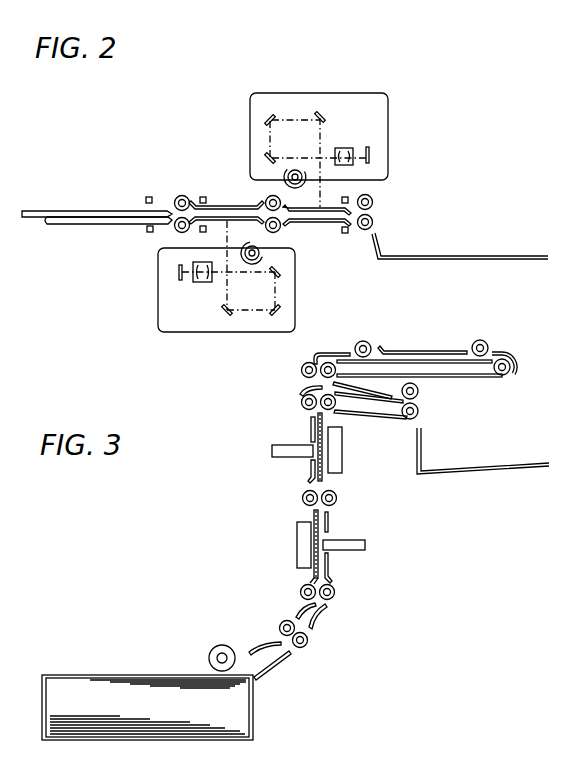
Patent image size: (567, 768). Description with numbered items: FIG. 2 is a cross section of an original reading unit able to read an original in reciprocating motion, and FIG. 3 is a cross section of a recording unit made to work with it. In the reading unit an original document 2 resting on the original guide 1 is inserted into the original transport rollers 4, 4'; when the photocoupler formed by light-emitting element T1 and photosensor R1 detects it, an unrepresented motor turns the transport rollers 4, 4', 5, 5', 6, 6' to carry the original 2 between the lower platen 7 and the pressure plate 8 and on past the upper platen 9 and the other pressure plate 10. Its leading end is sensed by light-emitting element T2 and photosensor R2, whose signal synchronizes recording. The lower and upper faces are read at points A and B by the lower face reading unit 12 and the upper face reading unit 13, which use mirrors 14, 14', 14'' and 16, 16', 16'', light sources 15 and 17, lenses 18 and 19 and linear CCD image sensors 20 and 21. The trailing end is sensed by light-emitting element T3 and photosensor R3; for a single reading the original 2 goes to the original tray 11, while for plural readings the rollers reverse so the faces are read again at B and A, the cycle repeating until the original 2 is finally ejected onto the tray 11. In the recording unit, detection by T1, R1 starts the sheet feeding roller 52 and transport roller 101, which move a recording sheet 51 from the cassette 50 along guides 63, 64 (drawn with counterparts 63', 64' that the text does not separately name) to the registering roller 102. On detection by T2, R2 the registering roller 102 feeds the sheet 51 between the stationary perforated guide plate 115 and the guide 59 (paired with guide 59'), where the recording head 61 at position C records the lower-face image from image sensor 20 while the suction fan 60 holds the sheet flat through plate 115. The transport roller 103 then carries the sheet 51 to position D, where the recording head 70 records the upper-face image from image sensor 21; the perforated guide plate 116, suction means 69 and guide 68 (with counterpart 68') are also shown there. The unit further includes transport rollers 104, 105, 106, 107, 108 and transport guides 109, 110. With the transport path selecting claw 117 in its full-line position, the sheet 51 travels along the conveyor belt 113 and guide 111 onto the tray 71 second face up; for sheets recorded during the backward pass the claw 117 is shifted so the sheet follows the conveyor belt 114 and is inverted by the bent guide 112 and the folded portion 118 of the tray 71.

In FIG. 2, the original guide 1 is at (62, 225).
In FIG. 2, the original document 2 is at (35, 211).
In FIG. 2, the original transport roller 4 is at (148, 244).
In FIG. 2, the original transport roller 4' is at (174, 178).
In FIG. 2, the original transport roller 5 is at (285, 232).
In FIG. 2, the original transport roller 5' is at (235, 167).
In FIG. 2, the original transport roller 6 is at (387, 222).
In FIG. 2, the original transport roller 6' is at (393, 197).
In FIG. 2, the lower platen 7 is at (232, 222).
In FIG. 2, the pressure plate 8 is at (244, 205).
In FIG. 2, the upper platen 9 is at (326, 207).
In FIG. 2, the pressure plate 10 is at (327, 224).
In FIG. 2, the original tray 11 is at (506, 256).
In FIG. 2, the lower face reading unit 12 is at (175, 332).
In FIG. 2, the upper face reading unit 13 is at (356, 93).
In FIG. 2, the mirror 14 is at (207, 317).
In FIG. 2, the mirror 14' is at (301, 309).
In FIG. 2, the mirror 14'' is at (313, 280).
In FIG. 2, the light source 15 is at (263, 255).
In FIG. 2, the mirror 16 is at (334, 109).
In FIG. 2, the mirror 16' is at (272, 94).
In FIG. 2, the mirror 16'' is at (243, 141).
In FIG. 2, the light source 17 is at (287, 175).
In FIG. 2, the lens 18 is at (199, 283).
In FIG. 2, the lens 19 is at (342, 148).
In FIG. 2, the linear CCD image sensor 20 is at (178, 273).
In FIG. 2, the linear CCD image sensor 21 is at (369, 150).
In FIG. 2, the light-emitting element T1 is at (149, 196).
In FIG. 2, the light-emitting element T2 is at (203, 196).
In FIG. 2, the light-emitting element T3 is at (349, 199).
In FIG. 2, the photosensor R1 is at (146, 229).
In FIG. 2, the photosensor R2 is at (200, 233).
In FIG. 2, the photosensor R3 is at (345, 234).
In FIG. 2, the reading point A is at (185, 252).
In FIG. 2, the reading point B is at (308, 162).
In FIG. 3, the cassette 50 is at (254, 712).
In FIG. 3, the recording sheet 51 is at (126, 675).
In FIG. 3, the sheet feeding roller 52 is at (220, 645).
In FIG. 3, the guide 59 is at (356, 576).
In FIG. 3, the guide plate 59' is at (356, 523).
In FIG. 3, the suction fan 60 is at (296, 542).
In FIG. 3, the ink jet recording head 61 is at (366, 545).
In FIG. 3, the guide 63 is at (285, 673).
In FIG. 3, the guide plate 63' is at (335, 622).
In FIG. 3, the guide 64 is at (261, 630).
In FIG. 3, the guide plate 64' is at (290, 599).
In FIG. 3, the guide 68 is at (284, 472).
In FIG. 3, the guide plate 68' is at (291, 427).
In FIG. 3, the suction means 69 is at (343, 452).
In FIG. 3, the ink jet recording head 70 is at (271, 450).
In FIG. 3, the recording sheet tray 71 is at (511, 467).
In FIG. 3, the transport roller 101 is at (308, 645).
In FIG. 3, the registering roller 102 is at (336, 596).
In FIG. 3, the transport roller 103 is at (338, 498).
In FIG. 3, the transport roller 104 is at (301, 403).
In FIG. 3, the transport roller 105 is at (302, 363).
In FIG. 3, the transport roller 106 is at (363, 341).
In FIG. 3, the transport roller 107 is at (480, 340).
In FIG. 3, the transport roller 108 is at (418, 411).
In FIG. 3, the transport guide 109 is at (331, 353).
In FIG. 3, the transport guide 110 is at (430, 351).
In FIG. 3, the transport guide 111 is at (419, 390).
In FIG. 3, the transport guide 112 is at (512, 355).
In FIG. 3, the conveyor belt 113 is at (360, 398).
In FIG. 3, the conveyor belt 114 is at (490, 380).
In FIG. 3, the stationary perforated guide plate 115 is at (313, 518).
In FIG. 3, the stationary perforated guide plate 116 is at (323, 470).
In FIG. 3, the transport path selecting claw 117 is at (305, 384).
In FIG. 3, the folded portion 118 is at (417, 462).
In FIG. 3, the recording position C is at (330, 547).
In FIG. 3, the recording position D is at (310, 440).